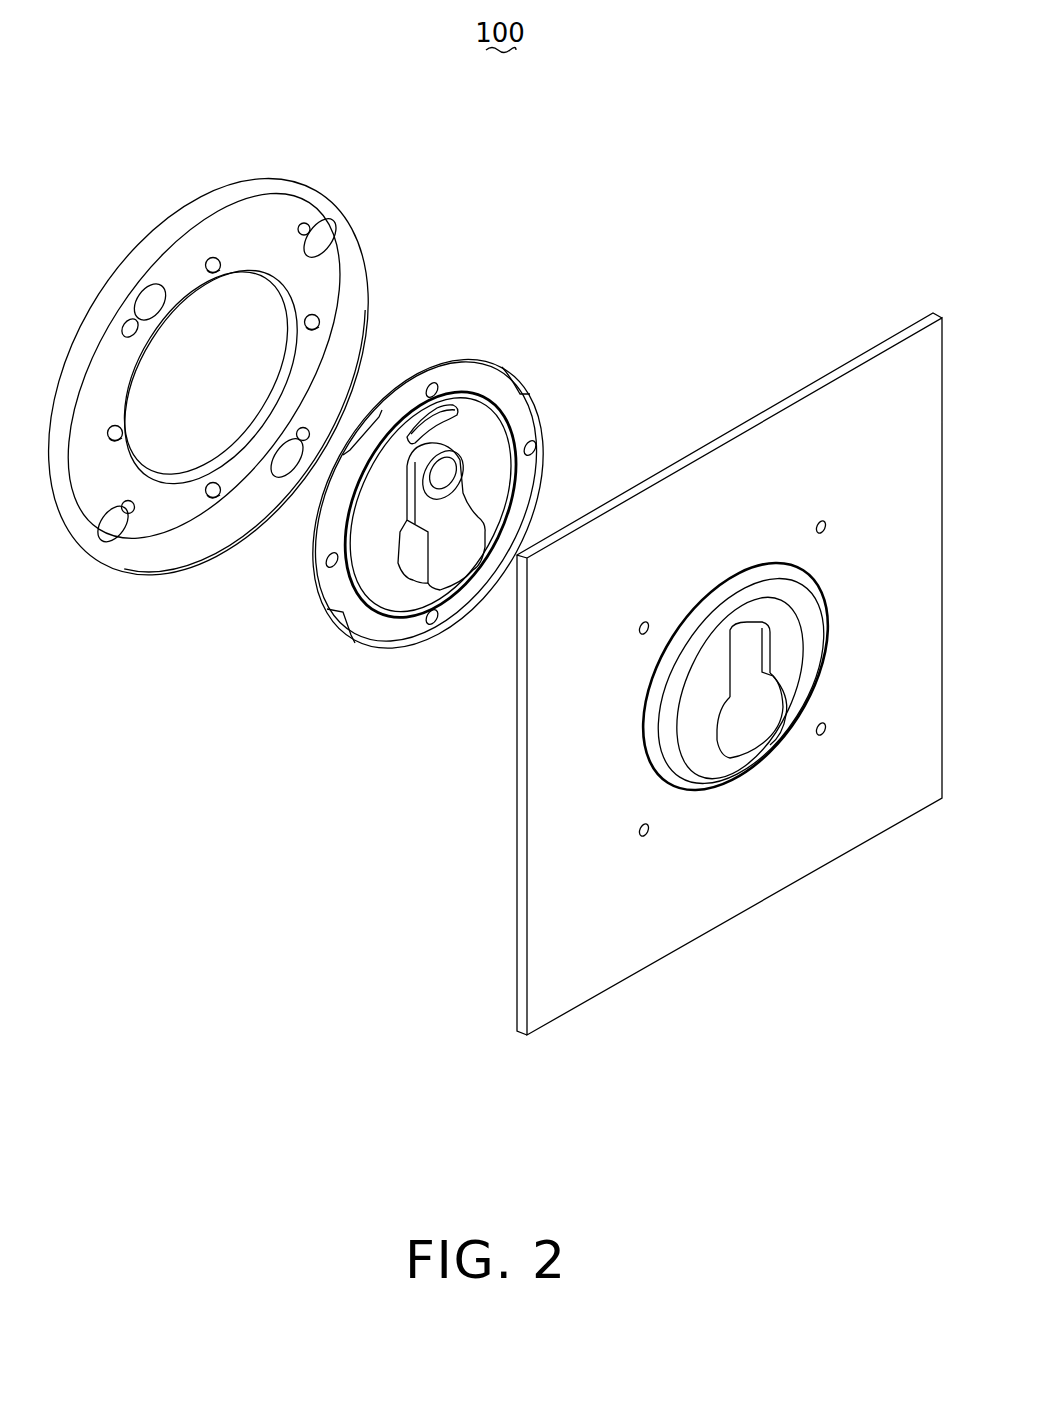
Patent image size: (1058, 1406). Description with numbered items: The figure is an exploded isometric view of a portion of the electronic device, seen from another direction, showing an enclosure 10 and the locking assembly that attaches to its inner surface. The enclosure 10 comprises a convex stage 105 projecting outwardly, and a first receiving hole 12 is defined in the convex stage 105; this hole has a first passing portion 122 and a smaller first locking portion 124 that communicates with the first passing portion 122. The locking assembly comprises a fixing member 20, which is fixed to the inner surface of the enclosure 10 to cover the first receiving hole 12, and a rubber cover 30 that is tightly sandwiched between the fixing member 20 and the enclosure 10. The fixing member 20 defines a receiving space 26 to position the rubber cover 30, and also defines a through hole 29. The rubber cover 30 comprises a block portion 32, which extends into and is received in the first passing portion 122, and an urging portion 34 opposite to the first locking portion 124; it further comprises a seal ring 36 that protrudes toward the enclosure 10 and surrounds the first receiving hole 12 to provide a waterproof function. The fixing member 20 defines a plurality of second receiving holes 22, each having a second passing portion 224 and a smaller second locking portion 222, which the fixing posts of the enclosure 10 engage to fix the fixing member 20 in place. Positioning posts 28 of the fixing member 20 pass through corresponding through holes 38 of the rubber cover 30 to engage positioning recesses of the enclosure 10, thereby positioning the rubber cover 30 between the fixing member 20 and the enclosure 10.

The enclosure 10 is at (880, 470).
The convex stage 105 is at (695, 747).
The first receiving hole 12 is at (815, 795).
The first passing portion 122 is at (737, 715).
The first locking portion 124 is at (747, 653).
The fixing member 20 is at (253, 186).
The second receiving holes 22 is at (281, 347).
The second locking portion 222 is at (320, 238).
The second passing portion 224 is at (307, 225).
The receiving space 26 is at (285, 272).
The positioning posts 28 is at (209, 258).
The through hole 29 is at (168, 432).
The rubber cover 30 is at (471, 358).
The block portion 32 is at (493, 534).
The urging portion 34 is at (457, 477).
The seal ring 36 is at (495, 403).
The through holes 38 is at (327, 610).